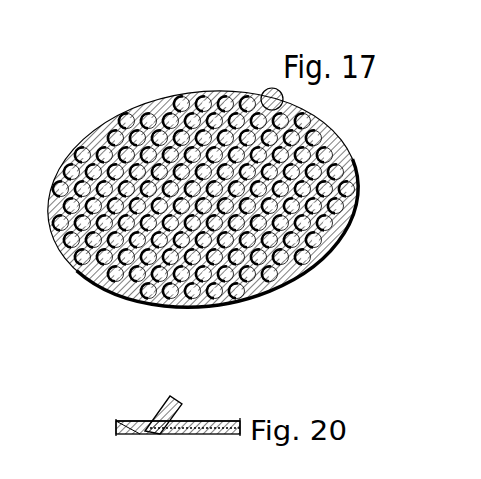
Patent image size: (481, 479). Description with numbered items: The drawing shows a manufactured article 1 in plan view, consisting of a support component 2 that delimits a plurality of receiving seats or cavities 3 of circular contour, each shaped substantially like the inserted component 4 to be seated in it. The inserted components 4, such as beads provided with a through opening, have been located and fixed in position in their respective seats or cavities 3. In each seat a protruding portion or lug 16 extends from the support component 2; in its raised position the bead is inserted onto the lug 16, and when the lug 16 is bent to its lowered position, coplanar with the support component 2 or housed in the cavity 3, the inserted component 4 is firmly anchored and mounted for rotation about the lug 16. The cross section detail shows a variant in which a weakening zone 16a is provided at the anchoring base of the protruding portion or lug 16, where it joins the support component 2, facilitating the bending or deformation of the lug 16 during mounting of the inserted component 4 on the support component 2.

In FIG. 17, the manufactured article 1 is at (78, 277).
In FIG. 17, the support component 2 is at (348, 171).
In FIG. 20, the support component 2 is at (203, 435).
In FIG. 20, the receiving seat or cavity 3 is at (183, 420).
In FIG. 17, the inserted component 4 is at (94, 126).
In FIG. 20, the protruding portion or lug 16 is at (162, 406).
In FIG. 20, the weakening zone 16a is at (148, 435).